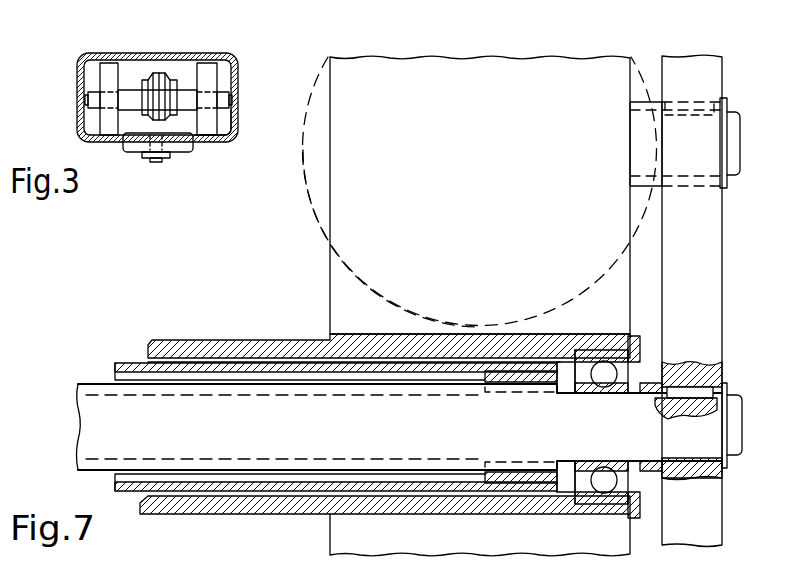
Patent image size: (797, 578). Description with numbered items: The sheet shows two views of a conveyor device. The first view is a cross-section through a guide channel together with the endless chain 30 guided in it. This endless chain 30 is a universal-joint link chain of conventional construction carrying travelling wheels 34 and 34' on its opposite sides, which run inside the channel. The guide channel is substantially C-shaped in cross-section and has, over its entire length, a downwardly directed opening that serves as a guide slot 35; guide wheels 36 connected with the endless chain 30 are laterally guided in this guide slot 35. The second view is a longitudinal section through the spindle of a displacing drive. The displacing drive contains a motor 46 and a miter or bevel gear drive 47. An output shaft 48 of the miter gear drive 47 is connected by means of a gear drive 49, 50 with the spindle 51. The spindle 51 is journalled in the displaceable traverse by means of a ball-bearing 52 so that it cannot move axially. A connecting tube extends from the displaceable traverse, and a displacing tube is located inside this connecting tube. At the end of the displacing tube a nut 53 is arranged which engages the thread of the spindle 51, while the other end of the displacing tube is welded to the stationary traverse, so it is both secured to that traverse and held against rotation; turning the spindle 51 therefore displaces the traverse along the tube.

In FIG. 3, the endless chain 30 is at (133, 66).
In FIG. 3, the travelling wheel 34 is at (101, 69).
In FIG. 3, the travelling wheel 34' is at (234, 81).
In FIG. 3, the guide slot 35 is at (204, 142).
In FIG. 3, the guide wheel 36 is at (128, 152).
In FIG. 7, the motor 46 is at (309, 182).
In FIG. 7, the miter gear drive 47 is at (340, 300).
In FIG. 7, the output shaft 48 is at (729, 110).
In FIG. 7, the gear drive 49 is at (708, 238).
In FIG. 7, the gear drive 50 is at (712, 318).
In FIG. 7, the spindle 51 is at (93, 389).
In FIG. 7, the ball-bearing 52 is at (608, 492).
In FIG. 7, the nut 53 is at (566, 490).